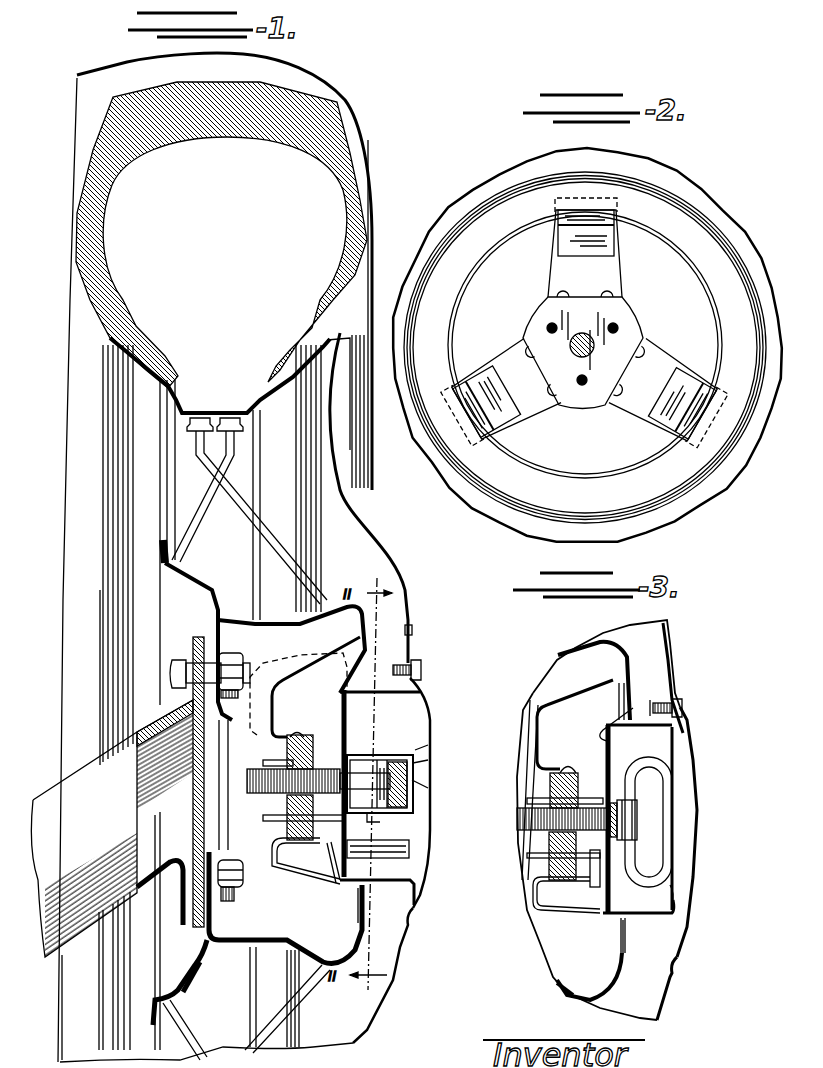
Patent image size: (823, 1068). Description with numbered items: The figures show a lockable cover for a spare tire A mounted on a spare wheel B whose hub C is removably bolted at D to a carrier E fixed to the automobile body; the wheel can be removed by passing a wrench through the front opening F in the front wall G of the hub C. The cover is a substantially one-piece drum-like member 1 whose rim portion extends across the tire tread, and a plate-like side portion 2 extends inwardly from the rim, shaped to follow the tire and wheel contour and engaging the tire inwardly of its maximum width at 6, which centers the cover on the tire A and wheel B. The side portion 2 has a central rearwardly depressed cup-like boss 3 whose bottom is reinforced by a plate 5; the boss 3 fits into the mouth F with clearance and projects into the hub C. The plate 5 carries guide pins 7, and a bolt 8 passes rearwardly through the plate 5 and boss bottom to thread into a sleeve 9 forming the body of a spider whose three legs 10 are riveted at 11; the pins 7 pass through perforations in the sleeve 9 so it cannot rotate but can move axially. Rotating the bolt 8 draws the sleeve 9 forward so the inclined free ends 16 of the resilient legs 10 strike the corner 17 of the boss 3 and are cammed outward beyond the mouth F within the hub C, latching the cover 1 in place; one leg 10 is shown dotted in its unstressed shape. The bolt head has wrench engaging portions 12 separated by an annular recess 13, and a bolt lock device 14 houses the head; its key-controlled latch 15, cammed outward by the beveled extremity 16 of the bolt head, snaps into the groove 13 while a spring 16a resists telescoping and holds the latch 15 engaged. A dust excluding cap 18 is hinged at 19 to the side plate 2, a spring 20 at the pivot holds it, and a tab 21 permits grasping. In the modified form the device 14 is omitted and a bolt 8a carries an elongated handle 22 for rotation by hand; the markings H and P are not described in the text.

In FIG. 1, the drum-like member 1 is at (368, 118).
In FIG. 3, the drum-like member 1 is at (675, 633).
In FIG. 1, the plate-like side portion 2 is at (373, 543).
In FIG. 3, the plate-like side portion 2 is at (678, 664).
In FIG. 1, the cup-like boss 3 is at (383, 886).
In FIG. 3, the cup-like boss 3 is at (665, 930).
In FIG. 1, the plate 5 is at (348, 730).
In FIG. 3, the plate 5 is at (612, 905).
In FIG. 1, the tire-engaging part 6 is at (368, 278).
In FIG. 1, the guide pins 7 is at (268, 763).
In FIG. 2, the guide pins 7 is at (619, 327).
In FIG. 3, the guide pins 7 is at (527, 800).
In FIG. 1, the bolt 8 is at (260, 790).
In FIG. 2, the bolt 8 is at (578, 357).
In FIG. 3, the bolt 8a is at (517, 824).
In FIG. 1, the sleeve 9 is at (294, 846).
In FIG. 2, the sleeve 9 is at (530, 318).
In FIG. 3, the sleeve 9 is at (580, 789).
In FIG. 1, the legs 10 is at (314, 654).
In FIG. 2, the legs 10 is at (620, 266).
In FIG. 3, the legs 10 is at (588, 692).
In FIG. 1, the rivet securement 11 is at (312, 733).
In FIG. 2, the rivet securement 11 is at (607, 292).
In FIG. 3, the rivet securement 11 is at (566, 760).
In FIG. 1, the wrench engaging portions 12 is at (356, 760).
In FIG. 1, the annular recess 13 is at (382, 760).
In FIG. 1, the bolt lock device 14 is at (386, 862).
In FIG. 1, the latch 15 is at (370, 818).
In FIG. 1, the beveled forward extremity / free end portion 16 is at (333, 688).
In FIG. 2, the beveled forward extremity / free end portion 16 is at (492, 360).
In FIG. 3, the beveled forward extremity / free end portion 16 is at (613, 720).
In FIG. 1, the spring 16a is at (440, 777).
In FIG. 1, the corner of the boss 17 is at (333, 880).
In FIG. 3, the corner of the boss 17 is at (598, 736).
In FIG. 1, the dust excluding cap 18 is at (436, 790).
In FIG. 3, the dust excluding cap 18 is at (698, 812).
In FIG. 1, the hinge 19 is at (422, 668).
In FIG. 3, the hinge 19 is at (684, 708).
In FIG. 1, the spring 20 is at (412, 628).
In FIG. 3, the spring 20 is at (670, 700).
In FIG. 1, the tab 21 is at (410, 930).
In FIG. 3, the tab 21 is at (677, 965).
In FIG. 3, the elongated handle 22 is at (649, 762).
In FIG. 1, the spare tire A is at (108, 112).
In FIG. 1, the spare wheel B is at (222, 410).
In FIG. 3, the spare wheel B is at (569, 655).
In FIG. 1, the hub C is at (162, 592).
In FIG. 2, the hub C is at (491, 176).
In FIG. 3, the hub C is at (560, 993).
In FIG. 1, the bolt structures D is at (244, 656).
In FIG. 1, the carrier E is at (55, 792).
In FIG. 2, the front opening F is at (452, 334).
In FIG. 3, the front opening F is at (642, 718).
In FIG. 1, the front wall G is at (353, 938).
In FIG. 2, the front wall G is at (485, 240).
In FIG. 3, the front wall G is at (630, 654).
In FIG. 1, the plate H is at (196, 636).
In FIG. 1, the plate P is at (355, 906).